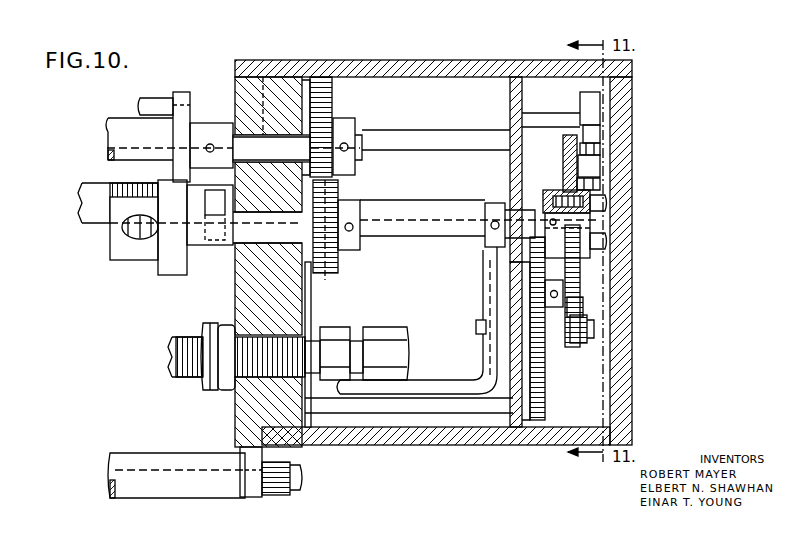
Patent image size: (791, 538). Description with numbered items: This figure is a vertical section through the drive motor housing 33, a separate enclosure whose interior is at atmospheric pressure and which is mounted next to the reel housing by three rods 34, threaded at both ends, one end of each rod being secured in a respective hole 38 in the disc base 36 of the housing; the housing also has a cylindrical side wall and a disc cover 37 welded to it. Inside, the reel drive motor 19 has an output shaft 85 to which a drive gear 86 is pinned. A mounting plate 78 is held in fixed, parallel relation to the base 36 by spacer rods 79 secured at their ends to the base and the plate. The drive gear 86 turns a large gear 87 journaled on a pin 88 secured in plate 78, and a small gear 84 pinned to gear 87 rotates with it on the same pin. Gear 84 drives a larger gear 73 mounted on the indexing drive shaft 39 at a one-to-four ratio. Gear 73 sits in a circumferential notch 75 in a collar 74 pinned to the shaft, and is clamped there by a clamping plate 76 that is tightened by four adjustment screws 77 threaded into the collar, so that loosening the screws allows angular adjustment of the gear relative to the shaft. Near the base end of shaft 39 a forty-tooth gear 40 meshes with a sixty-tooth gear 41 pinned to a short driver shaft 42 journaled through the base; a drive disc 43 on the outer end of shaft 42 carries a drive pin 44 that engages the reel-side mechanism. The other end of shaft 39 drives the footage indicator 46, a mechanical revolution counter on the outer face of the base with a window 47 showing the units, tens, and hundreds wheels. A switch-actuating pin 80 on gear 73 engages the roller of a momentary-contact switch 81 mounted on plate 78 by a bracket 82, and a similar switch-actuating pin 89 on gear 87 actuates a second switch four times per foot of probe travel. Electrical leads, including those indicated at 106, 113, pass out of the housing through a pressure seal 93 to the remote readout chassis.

The reel drive motor 19 is at (420, 284).
The drive motor housing 33 is at (415, 43).
The rods 34 is at (115, 153).
The base 36 is at (245, 285).
The disc cover 37 is at (632, 165).
The hole 38 is at (248, 465).
The indexing drive shaft 39 is at (408, 213).
The forty-tooth gear 40 is at (338, 268).
The sixty-tooth gear 41 is at (334, 93).
The driver shaft 42 is at (360, 130).
The drive disc 43 is at (180, 128).
The drive pin 44 is at (145, 98).
The footage indicator 46 is at (141, 255).
The window 47 is at (125, 232).
The gear 73 is at (582, 270).
The collar 74 is at (562, 190).
The circumferential notch 75 is at (600, 184).
The clamping plate 76 is at (590, 220).
The adjustment screws 77 is at (606, 203).
The mounting plate 78 is at (510, 92).
The spacer rods 79 is at (398, 138).
The switch-actuating pin 80 is at (600, 150).
The switch 81 is at (600, 106).
The bracket 82 is at (540, 120).
The small gear 84 is at (590, 340).
The output shaft 85 is at (580, 297).
The drive gear 86 is at (512, 281).
The large gear 87 is at (546, 382).
The pin 88 is at (500, 330).
The switch-actuating pin 89 is at (503, 262).
The pressure seal 93 is at (210, 370).
The leads 106 is at (88, 215).
The leads 113 is at (93, 219).